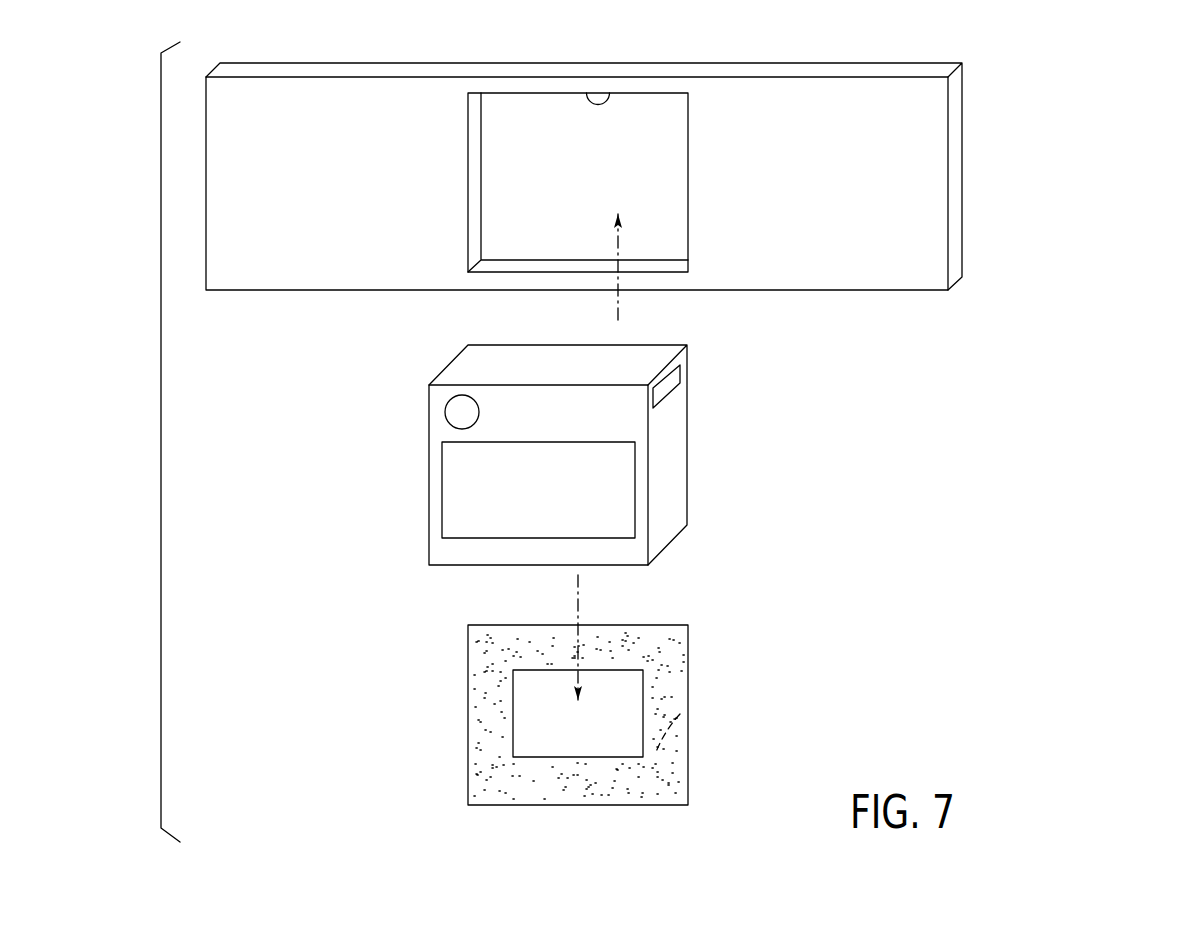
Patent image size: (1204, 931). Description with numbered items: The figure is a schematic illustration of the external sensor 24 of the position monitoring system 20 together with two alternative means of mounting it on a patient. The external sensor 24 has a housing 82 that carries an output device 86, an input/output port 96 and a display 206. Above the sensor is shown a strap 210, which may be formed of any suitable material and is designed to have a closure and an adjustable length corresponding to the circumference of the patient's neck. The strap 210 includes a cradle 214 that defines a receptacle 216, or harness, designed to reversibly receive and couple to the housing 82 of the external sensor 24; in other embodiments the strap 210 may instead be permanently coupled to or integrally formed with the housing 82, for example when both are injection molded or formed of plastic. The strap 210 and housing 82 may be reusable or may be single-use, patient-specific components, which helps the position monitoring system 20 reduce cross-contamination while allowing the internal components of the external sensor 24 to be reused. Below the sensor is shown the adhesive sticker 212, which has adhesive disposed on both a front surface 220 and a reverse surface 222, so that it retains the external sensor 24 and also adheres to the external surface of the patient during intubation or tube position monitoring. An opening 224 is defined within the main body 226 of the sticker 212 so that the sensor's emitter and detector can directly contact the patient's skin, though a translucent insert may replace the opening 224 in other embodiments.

The position monitoring system 20 is at (1099, 77).
The strap 210 is at (970, 246).
The cradle 214 is at (600, 95).
The receptacle 216 is at (654, 187).
The external sensor 24 is at (722, 446).
The housing 82 is at (465, 367).
The input/output port 96 is at (681, 366).
The output device 86 is at (450, 423).
The display 206 is at (543, 441).
The adhesive sticker 212 is at (710, 756).
The front surface 220 is at (672, 655).
The reverse surface 222 is at (680, 714).
The opening 224 is at (604, 742).
The main body 226 is at (523, 784).